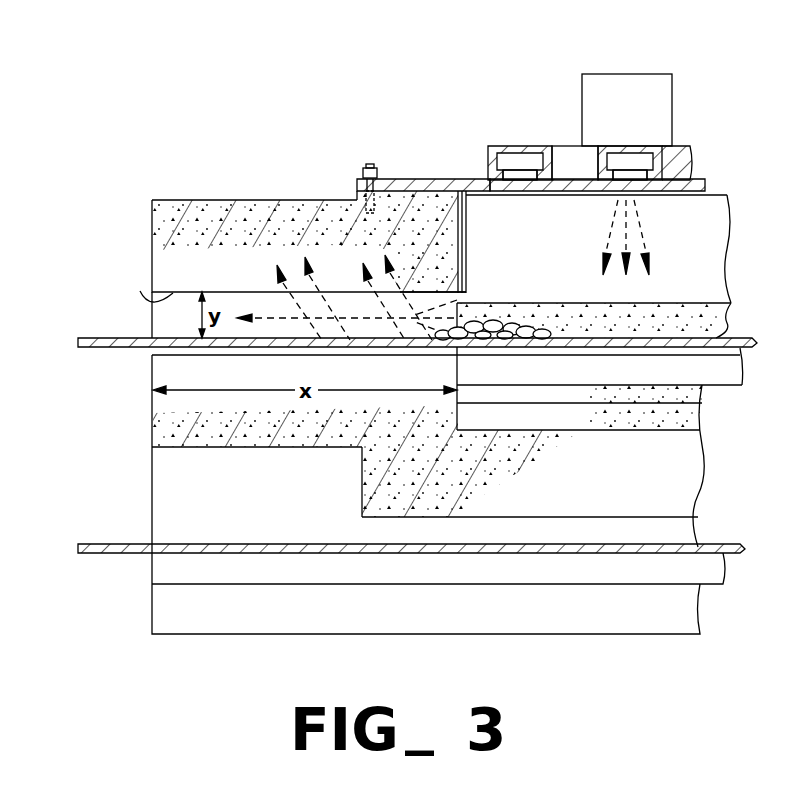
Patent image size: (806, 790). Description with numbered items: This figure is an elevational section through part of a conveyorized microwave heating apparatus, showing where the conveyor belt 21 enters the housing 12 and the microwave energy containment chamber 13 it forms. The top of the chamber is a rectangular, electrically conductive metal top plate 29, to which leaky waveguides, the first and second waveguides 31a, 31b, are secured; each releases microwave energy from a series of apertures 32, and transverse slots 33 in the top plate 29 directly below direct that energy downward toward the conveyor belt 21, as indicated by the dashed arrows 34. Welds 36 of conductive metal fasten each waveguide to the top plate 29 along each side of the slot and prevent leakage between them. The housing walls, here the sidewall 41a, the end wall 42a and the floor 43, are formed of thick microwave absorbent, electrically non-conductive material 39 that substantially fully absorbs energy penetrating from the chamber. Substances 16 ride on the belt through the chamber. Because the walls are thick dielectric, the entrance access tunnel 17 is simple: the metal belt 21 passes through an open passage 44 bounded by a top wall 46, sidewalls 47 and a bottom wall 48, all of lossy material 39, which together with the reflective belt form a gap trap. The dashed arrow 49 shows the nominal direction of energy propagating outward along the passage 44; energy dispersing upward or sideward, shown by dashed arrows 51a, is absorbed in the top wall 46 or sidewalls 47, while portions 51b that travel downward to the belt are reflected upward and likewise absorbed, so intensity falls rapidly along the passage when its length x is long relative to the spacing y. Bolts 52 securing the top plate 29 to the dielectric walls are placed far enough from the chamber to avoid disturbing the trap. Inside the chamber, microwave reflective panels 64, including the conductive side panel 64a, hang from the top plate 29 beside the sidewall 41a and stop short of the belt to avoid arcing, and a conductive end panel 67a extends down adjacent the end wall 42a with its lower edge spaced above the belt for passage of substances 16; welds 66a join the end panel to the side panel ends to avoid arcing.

The housing 12 is at (722, 457).
The microwave energy containment chamber 13 is at (617, 430).
The substances 16 is at (527, 338).
The entrance access tunnel portion 17 is at (278, 178).
The conveyor belt 21 is at (127, 354).
The top plate 29 is at (402, 172).
The first waveguide 31a is at (522, 145).
The second waveguide 31b is at (662, 160).
The apertures 32 is at (518, 180).
The transverse slots 33 is at (633, 190).
The dashed arrows 34 is at (640, 240).
The welds 36 is at (488, 186).
The microwave absorbent material 39 is at (387, 487).
The sidewall 41a is at (692, 322).
The end wall 42a is at (457, 414).
The floor 43 is at (678, 503).
The open passage 44 is at (138, 285).
The top wall 46 is at (335, 231).
The sidewalls 47 is at (152, 315).
The bottom wall 48 is at (250, 428).
The dashed arrow 49 is at (262, 284).
The dashed arrows 51a is at (470, 292).
The dashed arrows 51b is at (458, 351).
The bolts 52 is at (367, 166).
The microwave reflective panels 64 is at (742, 225).
The side panel 64a is at (707, 276).
The welds 66a is at (468, 223).
The end panel 67a is at (468, 255).